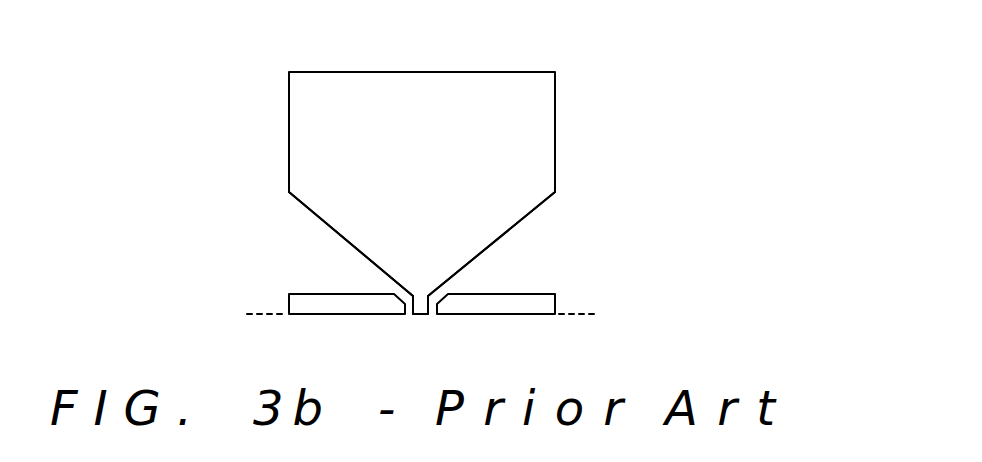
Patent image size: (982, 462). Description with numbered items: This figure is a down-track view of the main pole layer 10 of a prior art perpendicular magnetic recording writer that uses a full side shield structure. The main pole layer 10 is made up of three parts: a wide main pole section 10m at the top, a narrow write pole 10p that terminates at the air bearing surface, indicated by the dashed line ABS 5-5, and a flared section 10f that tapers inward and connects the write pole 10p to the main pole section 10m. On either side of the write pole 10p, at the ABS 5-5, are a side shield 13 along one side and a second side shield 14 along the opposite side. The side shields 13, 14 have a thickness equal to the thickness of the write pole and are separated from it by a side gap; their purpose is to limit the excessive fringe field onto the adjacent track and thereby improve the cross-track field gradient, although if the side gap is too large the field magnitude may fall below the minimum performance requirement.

The main pole layer 10 is at (468, 186).
The main pole section 10m is at (535, 124).
The flared section 10f is at (487, 232).
The write pole 10p is at (421, 312).
The side shield 13 is at (300, 303).
The second side shield 14 is at (545, 303).
The ABS 5 is at (419, 316).